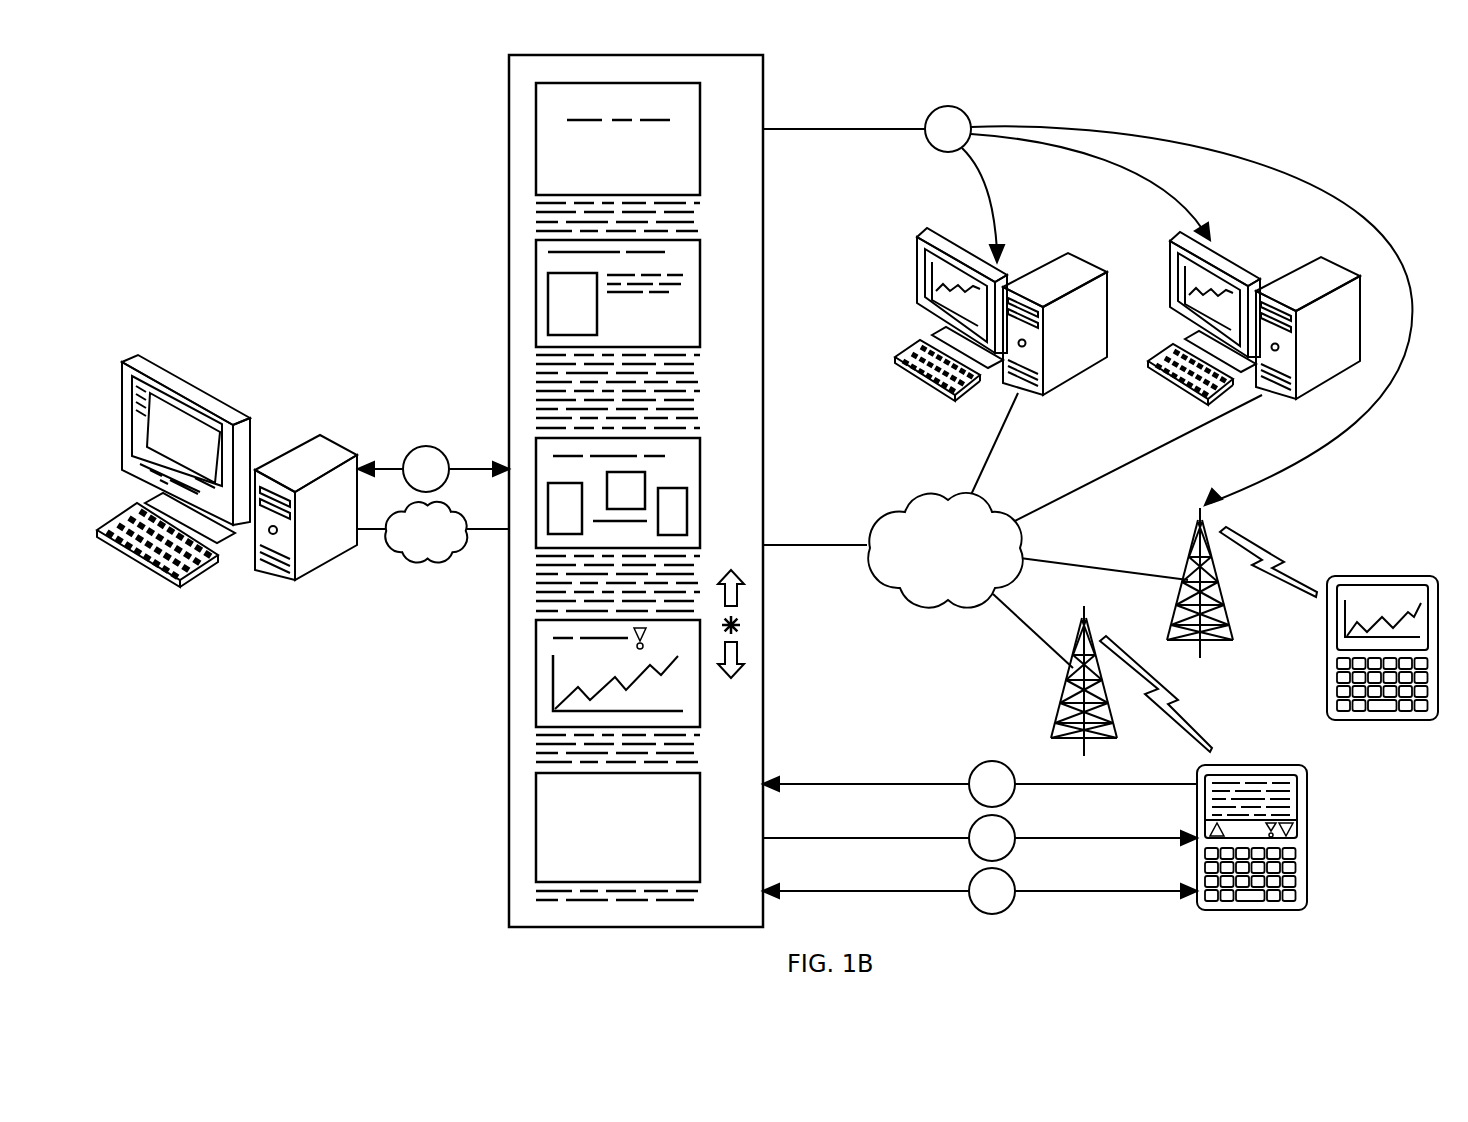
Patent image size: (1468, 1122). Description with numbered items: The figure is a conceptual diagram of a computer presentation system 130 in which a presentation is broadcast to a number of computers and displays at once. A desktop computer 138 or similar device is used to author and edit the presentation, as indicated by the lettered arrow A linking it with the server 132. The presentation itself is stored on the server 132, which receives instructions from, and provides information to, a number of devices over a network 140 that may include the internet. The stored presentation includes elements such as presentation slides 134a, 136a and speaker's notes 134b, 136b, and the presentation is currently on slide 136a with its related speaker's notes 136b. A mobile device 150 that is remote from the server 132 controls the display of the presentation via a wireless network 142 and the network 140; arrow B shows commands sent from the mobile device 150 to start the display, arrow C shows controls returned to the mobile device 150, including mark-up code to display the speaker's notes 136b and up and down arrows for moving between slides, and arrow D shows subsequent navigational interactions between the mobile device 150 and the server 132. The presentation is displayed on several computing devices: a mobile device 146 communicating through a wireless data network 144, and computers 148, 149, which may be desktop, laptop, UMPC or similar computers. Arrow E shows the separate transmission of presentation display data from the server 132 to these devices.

The system 130 is at (1366, 107).
The server 132 is at (763, 90).
The presentation slide 134a is at (536, 148).
The speaker's notes 134b is at (536, 200).
The presentation slide 136a is at (536, 683).
The speaker's notes 136b is at (536, 735).
The desktop computer 138 is at (346, 540).
The network 140 is at (929, 560).
The wireless network 142 is at (1062, 688).
The wireless data network 144 is at (1250, 548).
The mobile device 146 is at (1382, 720).
The computer 148 is at (915, 237).
The computer 149 is at (1168, 241).
The mobile device 150 is at (1307, 873).